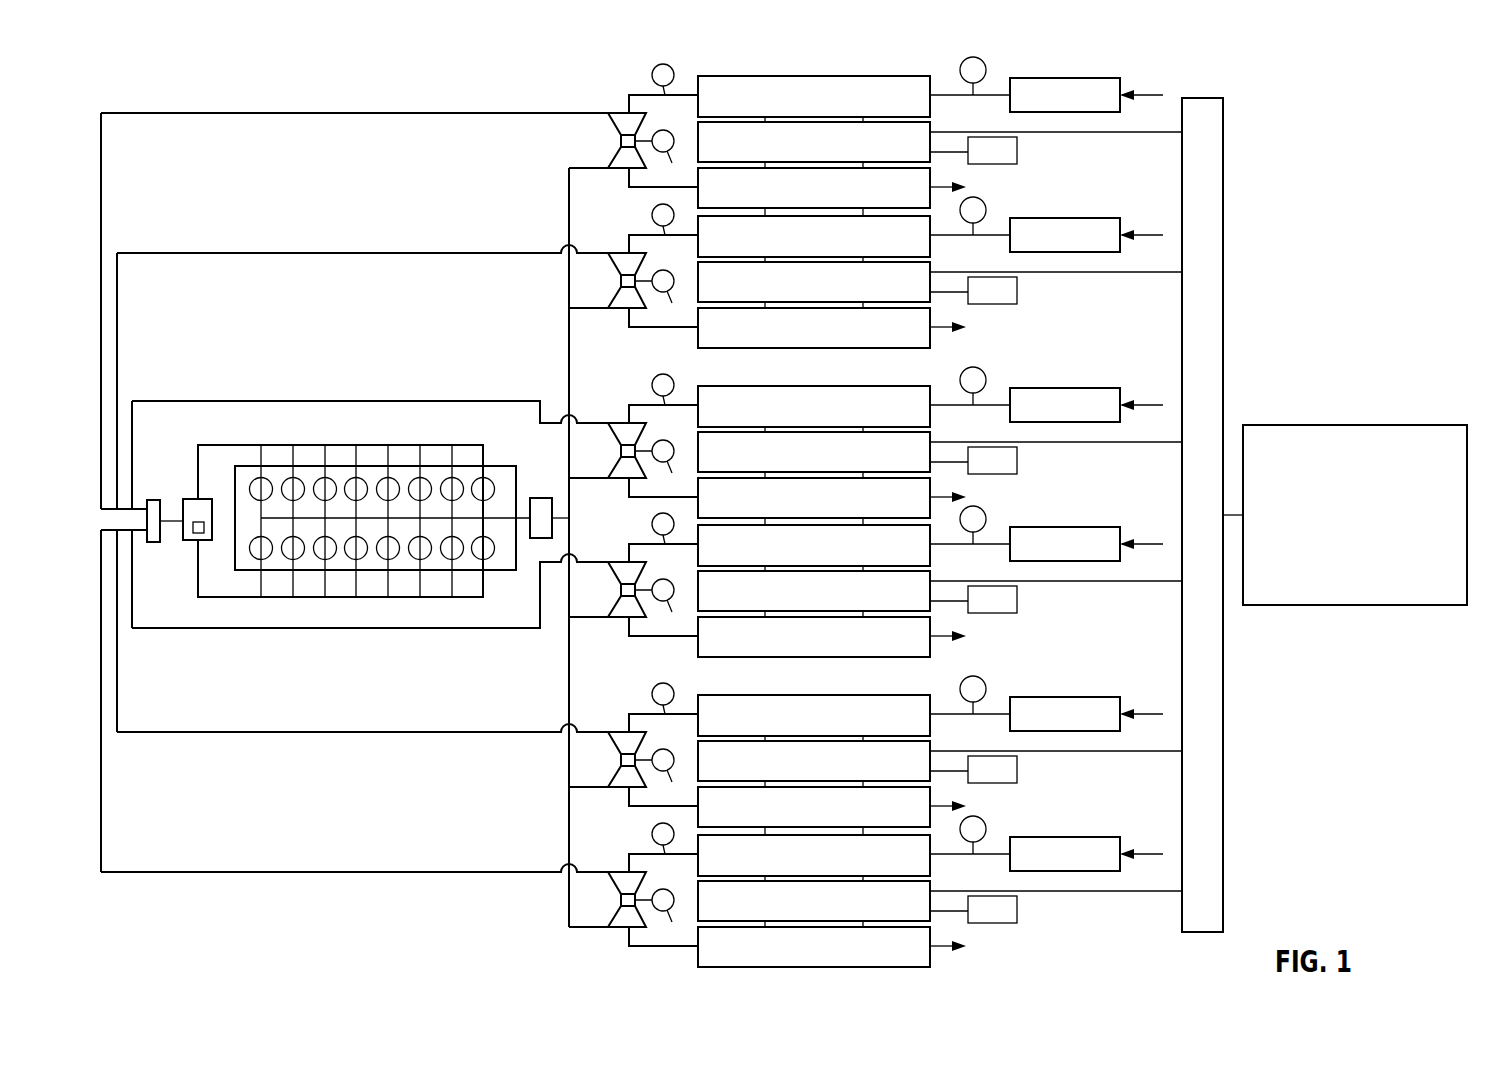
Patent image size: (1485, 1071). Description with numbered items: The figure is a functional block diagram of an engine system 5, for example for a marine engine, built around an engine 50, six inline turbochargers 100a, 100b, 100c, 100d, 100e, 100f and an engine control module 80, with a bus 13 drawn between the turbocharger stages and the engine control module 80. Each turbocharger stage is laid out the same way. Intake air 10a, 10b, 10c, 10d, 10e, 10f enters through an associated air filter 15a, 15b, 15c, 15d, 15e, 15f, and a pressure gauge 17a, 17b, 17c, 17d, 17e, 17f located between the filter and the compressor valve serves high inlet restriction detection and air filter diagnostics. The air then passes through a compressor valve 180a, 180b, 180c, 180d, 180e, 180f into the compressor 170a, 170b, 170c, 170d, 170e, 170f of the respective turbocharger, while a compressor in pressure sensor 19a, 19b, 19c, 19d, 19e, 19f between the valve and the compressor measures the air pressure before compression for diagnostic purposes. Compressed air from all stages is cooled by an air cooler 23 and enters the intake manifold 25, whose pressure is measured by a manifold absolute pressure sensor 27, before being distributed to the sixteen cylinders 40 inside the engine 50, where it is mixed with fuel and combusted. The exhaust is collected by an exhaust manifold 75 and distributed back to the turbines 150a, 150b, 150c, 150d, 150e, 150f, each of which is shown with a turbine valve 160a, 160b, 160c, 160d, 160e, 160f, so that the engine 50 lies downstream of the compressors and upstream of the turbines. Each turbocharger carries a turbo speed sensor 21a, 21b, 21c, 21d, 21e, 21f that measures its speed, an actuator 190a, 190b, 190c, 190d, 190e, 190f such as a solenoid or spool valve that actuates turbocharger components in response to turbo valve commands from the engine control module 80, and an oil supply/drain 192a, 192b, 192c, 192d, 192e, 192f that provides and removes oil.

The engine system 5 is at (565, 82).
The air 10a is at (1137, 94).
The air 10b is at (1138, 233).
The air 10c is at (1138, 403).
The air 10d is at (1138, 542).
The air 10e is at (1138, 712).
The air 10f is at (1138, 852).
The communication bus 13 is at (1225, 255).
The air filter 15a is at (1095, 112).
The air filter 15b is at (1095, 252).
The air filter 15c is at (1095, 422).
The air filter 15d is at (1095, 561).
The air filter 15e is at (1095, 731).
The air filter 15f is at (1095, 871).
The pressure gauge 17a is at (986, 78).
The pressure gauge 17b is at (986, 218).
The pressure gauge 17c is at (986, 388).
The pressure gauge 17d is at (986, 527).
The pressure gauge 17e is at (985, 684).
The pressure gauge 17f is at (986, 837).
The compressor in pressure sensor 19a is at (666, 132).
The compressor in pressure sensor 19b is at (664, 272).
The compressor in pressure sensor 19c is at (673, 375).
The compressor in pressure sensor 19d is at (664, 579).
The compressor in pressure sensor 19e is at (664, 751).
The compressor in pressure sensor 19f is at (666, 891).
The turbo speed sensor 21a is at (627, 172).
The turbo speed sensor 21b is at (663, 323).
The turbo speed sensor 21c is at (663, 495).
The turbo speed sensor 21d is at (663, 633).
The turbo speed sensor 21e is at (663, 803).
The turbo speed sensor 21f is at (663, 943).
The air cooler 23 is at (155, 498).
The intake manifold 25 is at (200, 498).
The manifold absolute pressure sensor 27 is at (197, 541).
The cylinders 40 is at (258, 478).
The engine 50 is at (364, 476).
The exhaust manifold 75 is at (538, 498).
The engine control module 80 is at (1355, 425).
The turbocharger 100a is at (603, 112).
The turbocharger 100b is at (595, 268).
The turbocharger 100c is at (597, 446).
The turbocharger 100d is at (584, 606).
The turbocharger 100e is at (595, 748).
The turbocharger 100f is at (597, 888).
The turbine 150a is at (613, 158).
The turbine 150b is at (612, 300).
The turbine 150c is at (618, 480).
The turbine 150d is at (600, 600).
The turbine 150e is at (612, 780).
The turbine 150f is at (612, 920).
The turbine valve 160a is at (698, 190).
The turbine valve 160b is at (697, 333).
The turbine valve 160c is at (697, 503).
The turbine valve 160d is at (697, 652).
The turbine valve 160e is at (697, 812).
The turbine valve 160f is at (697, 952).
The compressor 170a is at (616, 112).
The compressor 170b is at (615, 267).
The compressor 170c is at (618, 422).
The compressor 170d is at (618, 575).
The compressor 170e is at (615, 747).
The compressor 170f is at (615, 887).
The compressor valve 180a is at (935, 111).
The compressor valve 180b is at (935, 251).
The compressor valve 180c is at (935, 421).
The compressor valve 180d is at (935, 560).
The compressor valve 180e is at (935, 730).
The compressor valve 180f is at (935, 870).
The actuator 190a is at (933, 165).
The actuator 190b is at (933, 305).
The actuator 190c is at (933, 475).
The actuator 190d is at (933, 614).
The actuator 190e is at (933, 784).
The actuator 190f is at (933, 924).
The oil supply/drain 192a is at (1017, 152).
The oil supply/drain 192b is at (1017, 292).
The oil supply/drain 192c is at (1017, 462).
The oil supply/drain 192d is at (1017, 601).
The oil supply/drain 192e is at (1017, 771).
The oil supply/drain 192f is at (1017, 911).